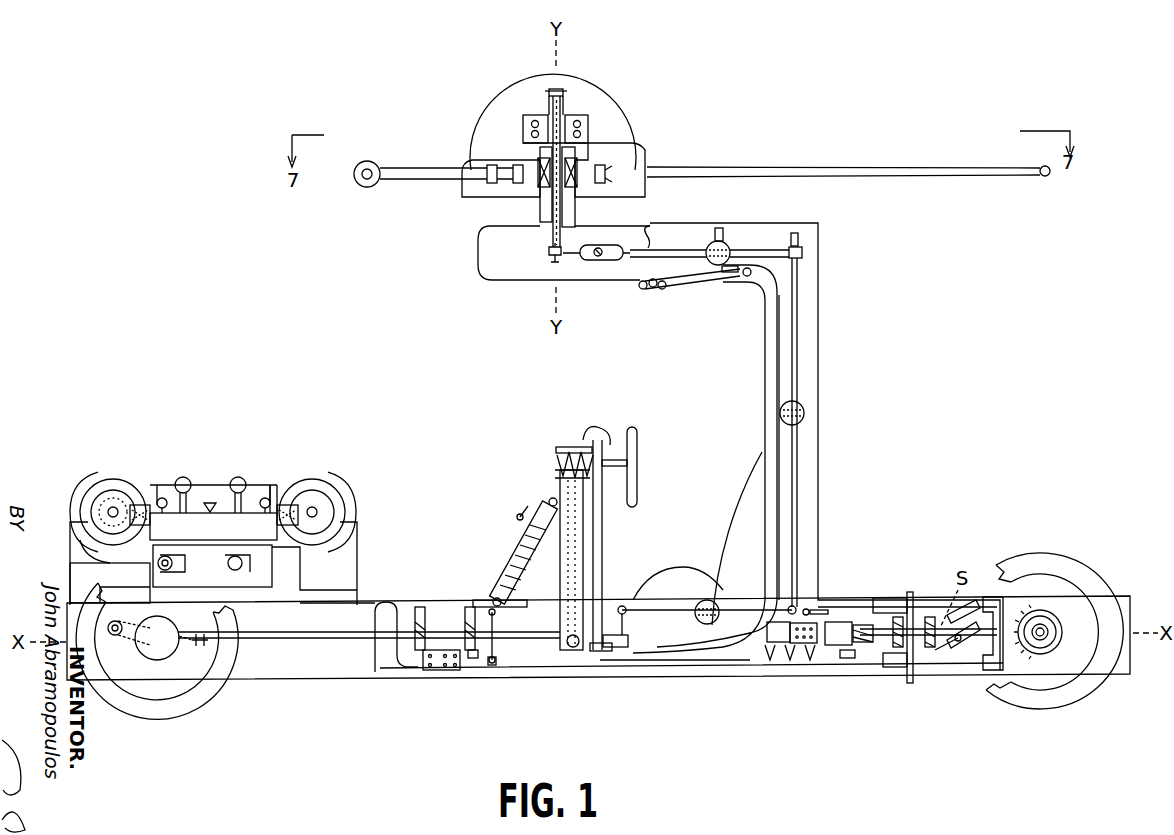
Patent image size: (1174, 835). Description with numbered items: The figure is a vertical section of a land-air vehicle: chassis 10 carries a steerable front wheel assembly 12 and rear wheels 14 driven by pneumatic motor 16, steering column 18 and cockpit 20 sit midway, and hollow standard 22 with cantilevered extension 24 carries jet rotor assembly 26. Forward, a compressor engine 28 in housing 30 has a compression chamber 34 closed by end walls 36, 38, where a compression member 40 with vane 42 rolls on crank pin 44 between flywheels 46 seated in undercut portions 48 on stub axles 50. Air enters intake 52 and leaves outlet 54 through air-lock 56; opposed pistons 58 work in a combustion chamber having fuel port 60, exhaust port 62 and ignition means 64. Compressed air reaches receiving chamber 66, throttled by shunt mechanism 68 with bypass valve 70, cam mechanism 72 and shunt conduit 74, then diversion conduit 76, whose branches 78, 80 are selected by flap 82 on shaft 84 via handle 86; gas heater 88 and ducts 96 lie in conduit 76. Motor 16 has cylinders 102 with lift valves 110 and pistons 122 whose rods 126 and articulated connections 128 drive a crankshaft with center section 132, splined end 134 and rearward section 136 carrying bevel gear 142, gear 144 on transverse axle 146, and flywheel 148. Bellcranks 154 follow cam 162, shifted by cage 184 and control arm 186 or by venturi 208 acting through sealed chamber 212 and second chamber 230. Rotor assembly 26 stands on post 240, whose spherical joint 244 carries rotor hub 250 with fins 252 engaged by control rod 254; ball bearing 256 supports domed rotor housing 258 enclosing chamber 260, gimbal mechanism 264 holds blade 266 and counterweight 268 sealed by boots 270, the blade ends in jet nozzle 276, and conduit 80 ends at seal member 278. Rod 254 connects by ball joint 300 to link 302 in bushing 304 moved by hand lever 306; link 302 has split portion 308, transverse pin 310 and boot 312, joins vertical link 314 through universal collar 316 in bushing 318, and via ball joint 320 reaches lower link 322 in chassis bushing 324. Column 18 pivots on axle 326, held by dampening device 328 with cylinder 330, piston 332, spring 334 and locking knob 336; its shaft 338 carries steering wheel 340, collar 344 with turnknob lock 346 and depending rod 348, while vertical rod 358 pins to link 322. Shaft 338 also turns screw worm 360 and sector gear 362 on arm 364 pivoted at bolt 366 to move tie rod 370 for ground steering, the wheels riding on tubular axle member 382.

The chassis 10 is at (598, 643).
The front wheel assembly 12 is at (157, 665).
The rear wheel assembly 14 is at (1054, 625).
The reciprocating pneumatic motor 16 is at (866, 615).
The steering column 18 is at (579, 539).
The operator's cockpit 20 is at (699, 559).
The vertical standard 22 is at (820, 315).
The standard extension 24 is at (564, 267).
The helicopter rotor assembly 26 is at (555, 142).
The compressor engine 28 is at (213, 492).
The housing 30 is at (70, 575).
The compression chamber 34 is at (100, 560).
The front end wall 36 is at (80, 525).
The rear end wall 38 is at (82, 500).
The compression member 40 is at (114, 506).
The vane 42 is at (118, 508).
The crank pin 44 is at (110, 505).
The flywheel 46 is at (325, 512).
The undercut portion 48 is at (345, 540).
The stub axle 50 is at (330, 500).
The air intake 52 is at (275, 487).
The compressed air outlet 54 is at (312, 568).
The flap-type valve air-lock 56 is at (130, 586).
The piston 58 is at (162, 498).
The fuel intake port 60 is at (185, 477).
The gaseous exhaust port 62 is at (238, 477).
The ignition means 64 is at (210, 503).
The receiving chamber 66 is at (290, 598).
The air shunt mechanism 68 is at (240, 562).
The bypass valve 70 is at (175, 558).
The adjustable cam mechanism 72 is at (178, 565).
The shunt conduit 74 is at (180, 578).
The diversion conduit 76 is at (378, 600).
The branch conduit 78 is at (690, 672).
The branch conduit 80 is at (763, 335).
The rigid flap 82 is at (472, 662).
The rotatable shaft 84 is at (496, 667).
The handle 86 is at (495, 622).
The auxiliary gas heater 88 is at (440, 672).
The ducts 96 is at (470, 604).
The cylinders 102 is at (890, 597).
The lift valve 110 is at (884, 665).
The piston 122 is at (916, 600).
The rod 126 is at (915, 645).
The articulated connection 128 is at (948, 652).
The center section 132 is at (975, 650).
The splined end 134 is at (928, 650).
The rearward section 136 is at (1000, 566).
The bevel gear 142 is at (1028, 612).
The gear 144 is at (1045, 648).
The transverse axle 146 is at (1045, 628).
The flywheel 148 is at (993, 672).
The bellcrank 154 is at (843, 660).
The contoured cylindrical cam 162 is at (860, 622).
The cylindrical cage 184 is at (816, 608).
The control arm 186 is at (810, 605).
The venturi device 208 is at (812, 646).
The sealed chamber 212 is at (828, 648).
The second chamber 230 is at (768, 645).
The vertical post 240 is at (577, 210).
The universal spherical joint 244 is at (536, 185).
The rotor hub 250 is at (578, 162).
The fins 252 is at (563, 118).
The control rod 254 is at (551, 240).
The ball bearing 256 is at (590, 128).
The rotor housing 258 is at (607, 93).
The interior chamber 260 is at (520, 104).
The gimbal mechanism 264 is at (606, 172).
The rotor blade 266 is at (822, 167).
The counterweight 268 is at (359, 170).
The flexible boots 270 is at (462, 172).
The jet propulsion nozzle 276 is at (1042, 166).
The seal member 278 is at (655, 228).
The ball joint 300 is at (547, 255).
The link 302 is at (630, 262).
The spherical bushing 304 is at (731, 247).
The hand lever 306 is at (655, 290).
The split portion 308 is at (615, 260).
The transverse pin 310 is at (603, 250).
The boot 312 is at (660, 250).
The vertical link 314 is at (798, 285).
The universal collar 316 is at (802, 250).
The spherical bushing 318 is at (805, 412).
The ball joint 320 is at (715, 604).
The lower horizontal link 322 is at (672, 607).
The spherical bushing 324 is at (718, 632).
The axle 326 is at (575, 650).
The dampening device 328 is at (486, 541).
The cylinder 330 is at (496, 575).
The piston 332 is at (510, 578).
The spring 334 is at (491, 510).
The locking mechanism 336 is at (520, 505).
The rotatable shaft 338 is at (556, 456).
The steering wheel 340 is at (638, 432).
The collar 344 is at (600, 438).
The turnknob lock 346 is at (593, 425).
The depending rod 348 is at (584, 540).
The vertical rod 358 is at (628, 628).
The screw worm 360 is at (570, 445).
The sector gear 362 is at (606, 500).
The depending arm 364 is at (584, 582).
The transverse bolt 366 is at (584, 560).
The tie rod 370 is at (345, 643).
The wheel axle member 382 is at (165, 652).